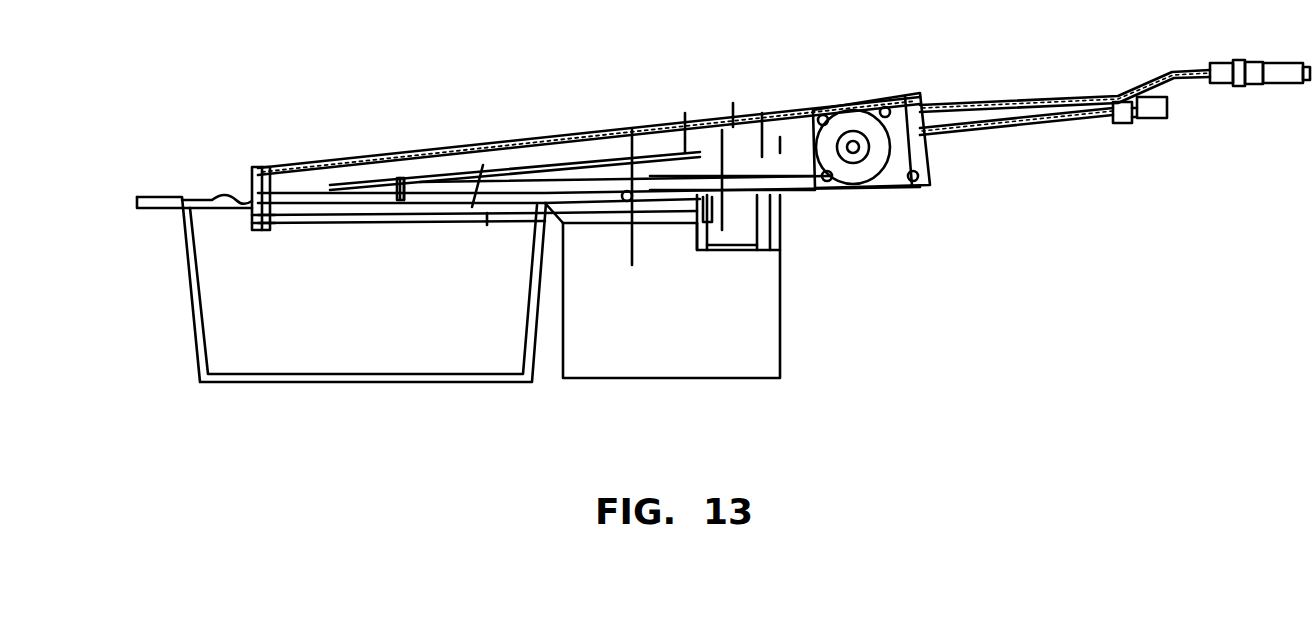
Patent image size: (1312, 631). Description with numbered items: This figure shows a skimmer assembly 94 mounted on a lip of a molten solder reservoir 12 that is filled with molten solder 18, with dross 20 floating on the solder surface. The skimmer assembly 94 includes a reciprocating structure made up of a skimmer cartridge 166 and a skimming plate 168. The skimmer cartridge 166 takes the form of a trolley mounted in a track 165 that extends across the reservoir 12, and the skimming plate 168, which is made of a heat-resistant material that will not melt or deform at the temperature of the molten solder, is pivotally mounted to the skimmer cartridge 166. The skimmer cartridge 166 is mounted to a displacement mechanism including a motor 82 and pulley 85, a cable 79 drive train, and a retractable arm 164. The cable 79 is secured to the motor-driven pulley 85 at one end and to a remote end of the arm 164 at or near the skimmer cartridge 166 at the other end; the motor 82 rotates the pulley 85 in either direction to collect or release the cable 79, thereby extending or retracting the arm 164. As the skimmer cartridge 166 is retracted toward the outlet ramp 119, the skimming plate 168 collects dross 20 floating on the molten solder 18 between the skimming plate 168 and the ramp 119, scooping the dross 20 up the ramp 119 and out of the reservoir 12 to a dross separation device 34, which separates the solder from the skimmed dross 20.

The molten solder reservoir 12 is at (308, 382).
The molten solder 18 is at (356, 298).
The dross 20 is at (215, 200).
The dross separation device 34 is at (690, 325).
The cable 79 is at (790, 190).
The motor 82 is at (846, 105).
The pulley 85 is at (847, 190).
The skimmer assembly 94 is at (406, 152).
The outlet ramp 119 is at (487, 215).
The retractable arm 164 is at (515, 137).
The track 165 is at (681, 125).
The skimmer cartridge 166 is at (271, 167).
The skimming plate 168 is at (252, 220).